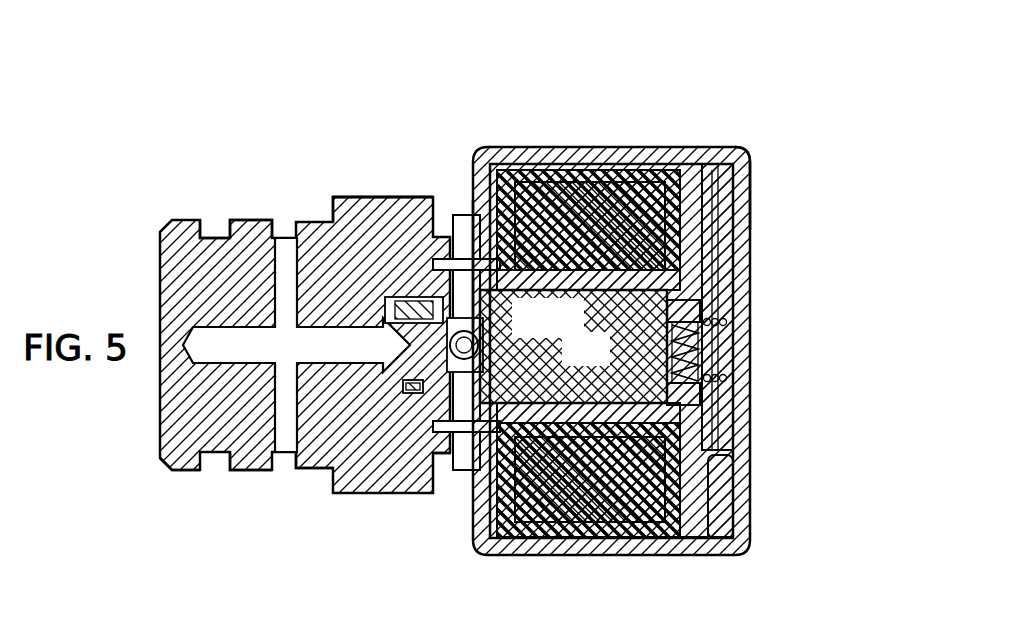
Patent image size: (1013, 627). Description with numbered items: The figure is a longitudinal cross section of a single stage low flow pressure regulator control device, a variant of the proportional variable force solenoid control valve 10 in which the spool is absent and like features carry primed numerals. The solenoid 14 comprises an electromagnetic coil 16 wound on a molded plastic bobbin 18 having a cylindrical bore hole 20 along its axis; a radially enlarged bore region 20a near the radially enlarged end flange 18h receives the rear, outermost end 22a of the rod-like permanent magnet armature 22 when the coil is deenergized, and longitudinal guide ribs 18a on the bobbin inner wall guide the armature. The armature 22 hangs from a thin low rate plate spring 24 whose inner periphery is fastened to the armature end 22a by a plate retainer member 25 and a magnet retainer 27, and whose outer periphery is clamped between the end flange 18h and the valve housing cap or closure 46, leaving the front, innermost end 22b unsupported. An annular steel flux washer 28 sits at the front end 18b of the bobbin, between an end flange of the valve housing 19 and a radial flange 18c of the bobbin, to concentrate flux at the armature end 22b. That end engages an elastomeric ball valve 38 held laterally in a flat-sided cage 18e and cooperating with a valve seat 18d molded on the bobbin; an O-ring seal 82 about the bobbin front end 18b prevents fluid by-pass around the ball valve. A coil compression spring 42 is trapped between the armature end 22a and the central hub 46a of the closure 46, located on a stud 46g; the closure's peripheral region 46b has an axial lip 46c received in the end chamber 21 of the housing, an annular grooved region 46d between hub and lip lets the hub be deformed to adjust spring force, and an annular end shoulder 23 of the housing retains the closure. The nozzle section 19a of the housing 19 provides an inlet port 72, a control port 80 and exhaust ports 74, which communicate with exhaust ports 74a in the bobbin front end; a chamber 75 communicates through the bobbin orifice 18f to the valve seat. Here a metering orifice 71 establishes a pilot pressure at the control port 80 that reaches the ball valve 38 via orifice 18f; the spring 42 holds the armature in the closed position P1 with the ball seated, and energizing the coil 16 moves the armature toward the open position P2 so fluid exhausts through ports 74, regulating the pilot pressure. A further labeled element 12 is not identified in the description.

The proportional variable force solenoid control valve 10 is at (488, 95).
The body 12 is at (165, 385).
The solenoid 14 is at (614, 165).
The electromagnetic coil 16 is at (644, 182).
The bobbin 18 is at (705, 223).
The armature guide ribs 18a is at (485, 430).
The front end of the bobbin 18b is at (573, 172).
The radial flange of the bobbin 18c is at (472, 225).
The valve seat 18d is at (420, 400).
The cage 18e is at (482, 313).
The bobbin orifice 18f is at (403, 181).
The radially enlarged end flange 18h is at (702, 548).
The valve housing 19 is at (393, 197).
The nozzle section 19a is at (174, 472).
The bore hole 20 is at (622, 245).
The radially enlarged bore region 20a is at (683, 262).
The cylindrical end chamber 21 is at (684, 552).
The permanent magnet armature 22 is at (603, 366).
The rear outermost end of the armature 22a is at (705, 388).
The front innermost end of the armature 22b is at (447, 395).
The annular end shoulder 23 is at (747, 190).
The plate spring 24 is at (740, 500).
The plate retainer member 25 is at (743, 460).
The magnet retainer 27 is at (720, 412).
The flux washer 28 is at (508, 172).
The ball valve 38 is at (412, 300).
The coil compression spring 42 is at (688, 395).
The valve housing cap or closure 46 is at (757, 288).
The central hub 46a is at (750, 353).
The peripheral region 46b is at (730, 167).
The axially extending lip 46c is at (721, 168).
The annular grooved region 46d is at (747, 233).
The spring locating stud 46g is at (723, 343).
The metering orifice 71 is at (232, 305).
The inlet port 72 is at (213, 258).
The second exhaust ports 74 is at (455, 220).
The bobbin exhaust ports 74a is at (452, 258).
The chamber 75 is at (345, 405).
The control ports 80 is at (273, 430).
The O-ring seal 82 is at (400, 392).
The normally closed ball valve position P1 is at (545, 440).
The ball valve open position P2 is at (560, 500).